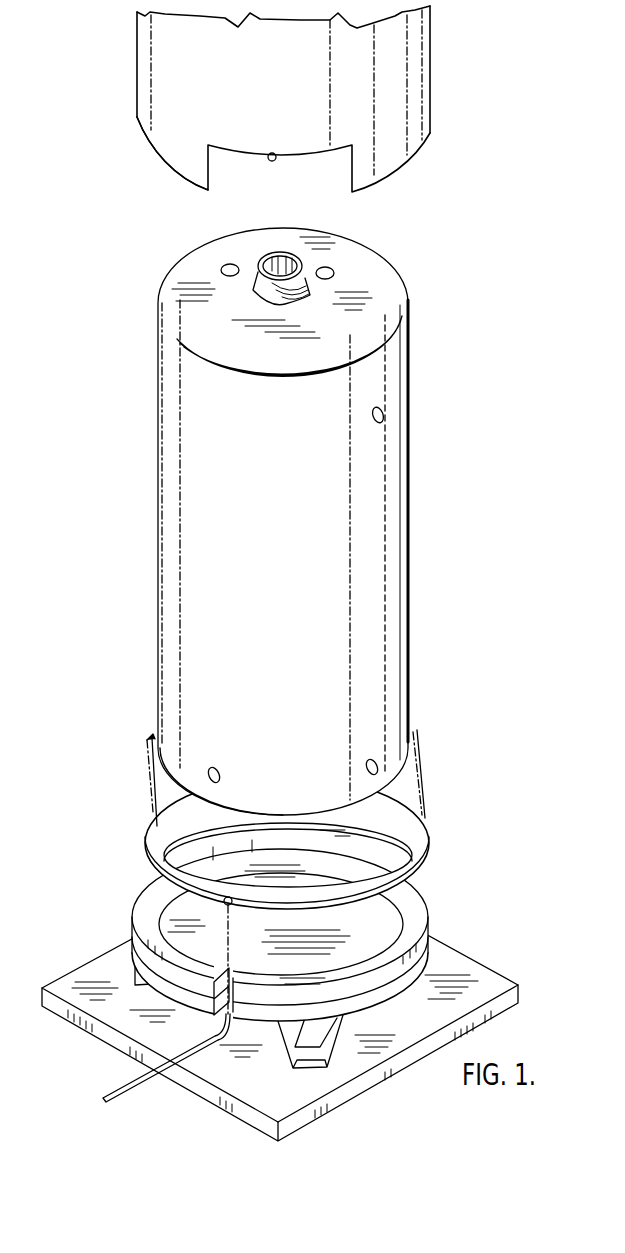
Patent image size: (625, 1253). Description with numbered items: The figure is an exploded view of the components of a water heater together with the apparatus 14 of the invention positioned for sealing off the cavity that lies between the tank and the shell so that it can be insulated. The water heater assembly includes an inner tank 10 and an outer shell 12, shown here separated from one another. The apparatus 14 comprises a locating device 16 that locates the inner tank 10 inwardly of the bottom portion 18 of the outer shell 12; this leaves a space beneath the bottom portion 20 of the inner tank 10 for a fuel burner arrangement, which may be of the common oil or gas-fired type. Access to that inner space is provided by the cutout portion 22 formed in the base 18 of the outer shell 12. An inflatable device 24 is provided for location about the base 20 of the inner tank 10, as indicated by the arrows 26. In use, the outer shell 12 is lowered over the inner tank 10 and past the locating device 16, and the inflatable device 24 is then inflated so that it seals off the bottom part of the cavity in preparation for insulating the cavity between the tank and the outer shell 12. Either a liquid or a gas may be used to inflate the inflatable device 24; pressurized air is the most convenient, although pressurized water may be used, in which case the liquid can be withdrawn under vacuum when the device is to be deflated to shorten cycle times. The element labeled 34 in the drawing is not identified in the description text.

The inner tank 10 is at (420, 480).
The outer shell 12 is at (438, 83).
The apparatus 14 is at (447, 877).
The locating device 16 is at (425, 877).
The bottom portion of the outer shell 18 is at (160, 127).
The bottom portion of the inner tank 20 is at (170, 773).
The cutout portion 22 is at (277, 153).
The inflatable device 24 is at (425, 803).
The arrows 26 is at (413, 732).
The wire lead 34 is at (142, 913).